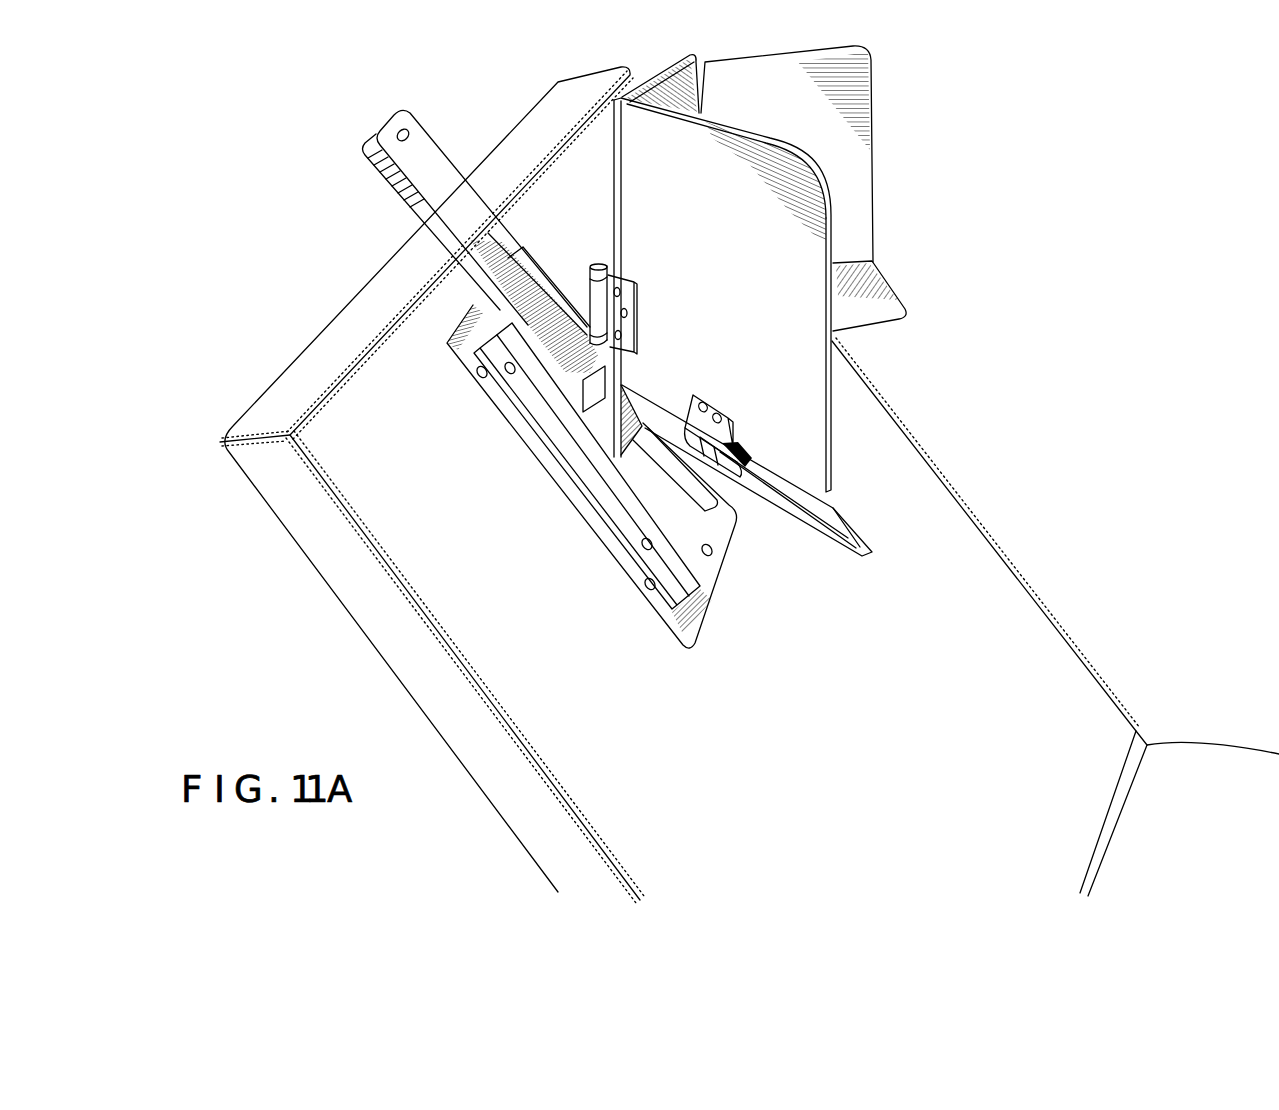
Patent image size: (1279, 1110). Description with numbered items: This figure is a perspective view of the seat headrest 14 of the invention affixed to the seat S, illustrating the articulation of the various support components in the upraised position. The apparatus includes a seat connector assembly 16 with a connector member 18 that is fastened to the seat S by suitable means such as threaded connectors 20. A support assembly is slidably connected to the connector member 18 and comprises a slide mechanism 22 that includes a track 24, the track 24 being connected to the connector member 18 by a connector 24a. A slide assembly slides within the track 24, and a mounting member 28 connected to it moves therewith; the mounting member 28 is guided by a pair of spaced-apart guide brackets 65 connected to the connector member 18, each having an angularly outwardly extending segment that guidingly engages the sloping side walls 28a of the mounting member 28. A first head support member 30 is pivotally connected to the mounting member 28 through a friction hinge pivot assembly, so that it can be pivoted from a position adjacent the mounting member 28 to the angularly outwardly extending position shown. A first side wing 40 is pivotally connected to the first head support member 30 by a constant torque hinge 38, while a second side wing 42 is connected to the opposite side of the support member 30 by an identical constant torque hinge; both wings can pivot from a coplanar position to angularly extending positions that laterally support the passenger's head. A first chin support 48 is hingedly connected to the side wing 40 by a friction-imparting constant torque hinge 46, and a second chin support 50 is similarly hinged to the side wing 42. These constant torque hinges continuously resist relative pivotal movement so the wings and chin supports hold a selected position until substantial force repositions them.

The seat S is at (1020, 611).
The seat headrest 14 is at (340, 197).
The seat connector assembly 16 is at (486, 434).
The connector member 18 is at (568, 472).
The threaded connectors 20 is at (477, 376).
The slide mechanism 22 is at (512, 231).
The track 24 is at (615, 476).
The connector 24a is at (716, 557).
The mounting member 28 is at (461, 194).
The sloping side walls 28a is at (400, 129).
The first head support member 30 is at (683, 97).
The constant torque hinge 38 is at (600, 268).
The first side wing 40 is at (815, 451).
The second side wing 42 is at (868, 102).
The constant torque hinge 46 is at (707, 397).
The first chin support 48 is at (850, 533).
The second chin support 50 is at (882, 297).
The guide brackets 65 is at (612, 500).